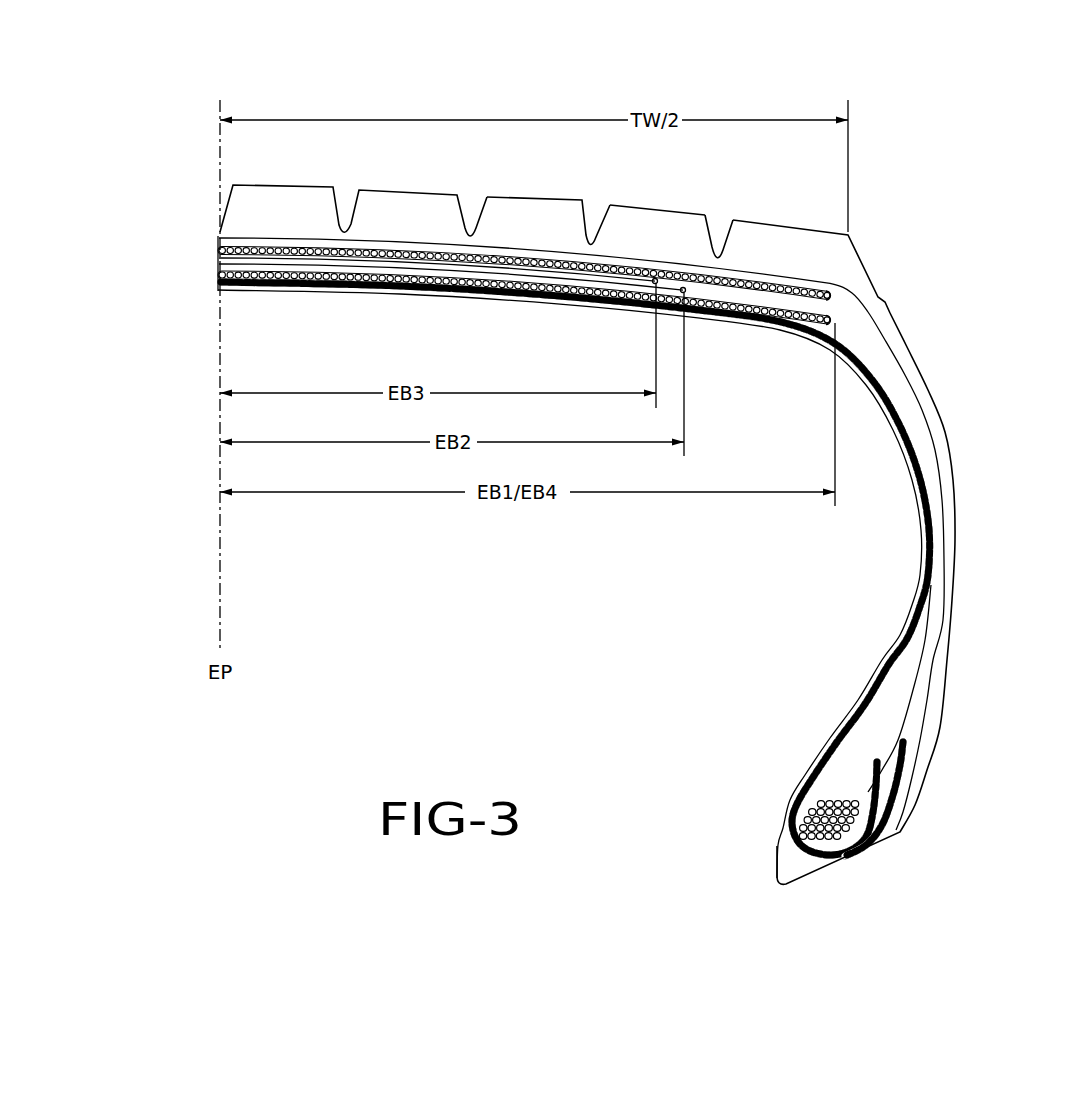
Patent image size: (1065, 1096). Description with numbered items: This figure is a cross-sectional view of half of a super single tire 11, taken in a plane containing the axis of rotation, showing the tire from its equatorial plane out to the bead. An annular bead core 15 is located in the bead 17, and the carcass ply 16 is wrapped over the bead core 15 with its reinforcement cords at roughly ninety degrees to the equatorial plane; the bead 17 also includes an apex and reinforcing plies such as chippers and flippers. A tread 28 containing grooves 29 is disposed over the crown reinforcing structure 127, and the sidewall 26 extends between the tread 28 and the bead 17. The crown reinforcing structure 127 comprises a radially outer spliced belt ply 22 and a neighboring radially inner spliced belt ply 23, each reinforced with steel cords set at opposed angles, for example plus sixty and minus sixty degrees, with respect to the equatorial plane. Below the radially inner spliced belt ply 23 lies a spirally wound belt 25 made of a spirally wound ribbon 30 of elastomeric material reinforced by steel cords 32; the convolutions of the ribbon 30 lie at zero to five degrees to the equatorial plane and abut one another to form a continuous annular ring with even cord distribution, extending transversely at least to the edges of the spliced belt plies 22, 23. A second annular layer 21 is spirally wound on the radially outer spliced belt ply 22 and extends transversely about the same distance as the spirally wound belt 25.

The super single tire 11 is at (951, 212).
The bead core 15 is at (836, 828).
The carcass ply 16 is at (915, 628).
The bead 17 is at (790, 773).
The second annular layer 21 is at (301, 252).
The radially outer spliced belt ply 22 is at (408, 264).
The radially inner spliced belt ply 23 is at (507, 279).
The spirally wound belt 25 is at (607, 291).
The sidewall 26 is at (949, 569).
The tread 28 is at (511, 214).
The groove 29 is at (720, 240).
The spirally wound ribbon 30 is at (786, 279).
The steel cords 32 is at (822, 292).
The crown reinforcing structure 127 is at (392, 286).